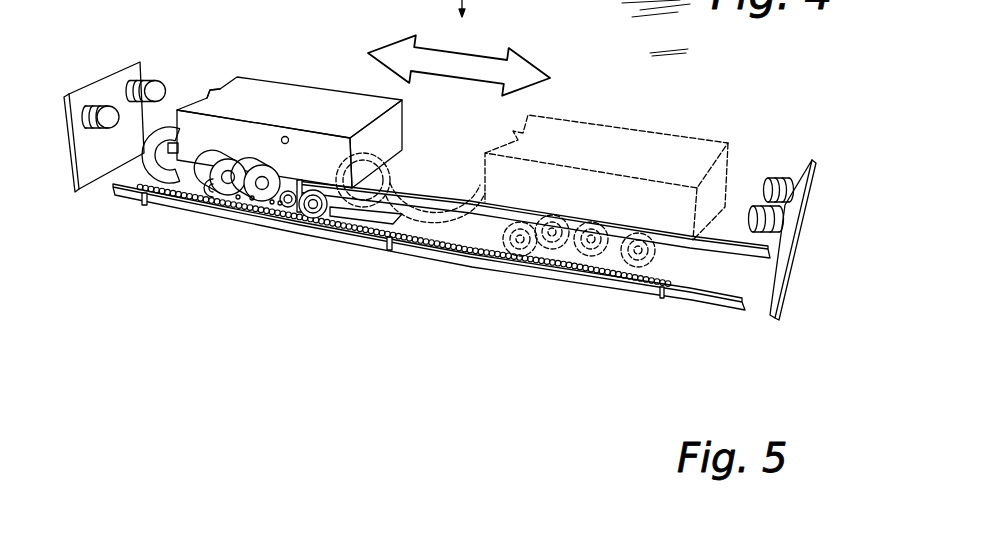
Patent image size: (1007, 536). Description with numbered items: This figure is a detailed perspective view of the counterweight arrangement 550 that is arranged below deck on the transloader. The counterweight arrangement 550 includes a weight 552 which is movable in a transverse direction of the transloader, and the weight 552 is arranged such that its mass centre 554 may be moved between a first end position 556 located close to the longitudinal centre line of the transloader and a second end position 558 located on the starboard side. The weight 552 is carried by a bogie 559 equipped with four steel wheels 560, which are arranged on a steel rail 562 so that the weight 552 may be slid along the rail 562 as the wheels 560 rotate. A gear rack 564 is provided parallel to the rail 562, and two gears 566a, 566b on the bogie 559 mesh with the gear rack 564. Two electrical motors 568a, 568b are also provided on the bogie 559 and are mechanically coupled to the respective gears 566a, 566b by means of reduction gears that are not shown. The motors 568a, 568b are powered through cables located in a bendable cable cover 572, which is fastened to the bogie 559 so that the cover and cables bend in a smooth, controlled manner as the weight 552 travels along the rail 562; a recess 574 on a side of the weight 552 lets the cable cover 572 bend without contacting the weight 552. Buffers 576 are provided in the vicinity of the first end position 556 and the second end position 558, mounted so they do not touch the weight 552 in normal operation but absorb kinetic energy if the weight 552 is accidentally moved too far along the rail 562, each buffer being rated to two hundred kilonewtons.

The counterweight arrangement 550 is at (683, 91).
The weight 552 is at (274, 100).
The mass centre 554 is at (285, 137).
The first end position 556 is at (176, 66).
The second end position 558 is at (795, 142).
The bogie 559 is at (290, 212).
The steel wheels 560 is at (207, 187).
The steel rail 562 is at (714, 302).
The gear rack 564 is at (450, 252).
The gear 566a is at (231, 202).
The gear 566b is at (267, 217).
The electrical motor 568a is at (204, 152).
The electrical motor 568b is at (286, 167).
The bendable cable cover 572 is at (147, 168).
The recess 574 is at (210, 96).
The buffers 576 is at (93, 104).